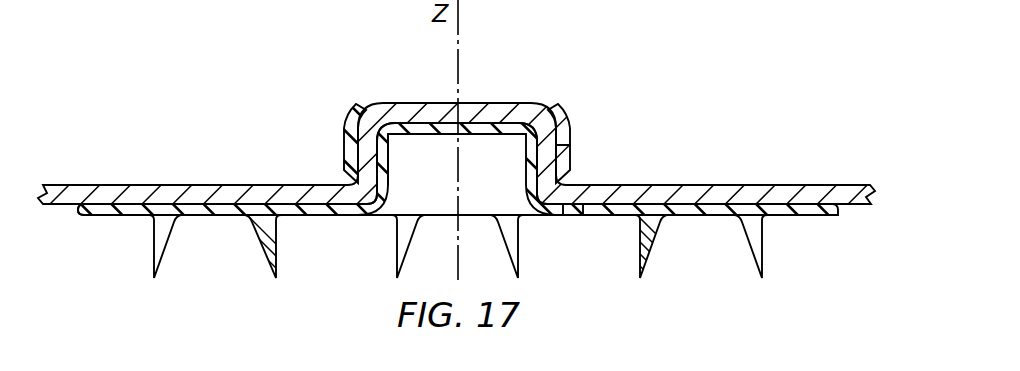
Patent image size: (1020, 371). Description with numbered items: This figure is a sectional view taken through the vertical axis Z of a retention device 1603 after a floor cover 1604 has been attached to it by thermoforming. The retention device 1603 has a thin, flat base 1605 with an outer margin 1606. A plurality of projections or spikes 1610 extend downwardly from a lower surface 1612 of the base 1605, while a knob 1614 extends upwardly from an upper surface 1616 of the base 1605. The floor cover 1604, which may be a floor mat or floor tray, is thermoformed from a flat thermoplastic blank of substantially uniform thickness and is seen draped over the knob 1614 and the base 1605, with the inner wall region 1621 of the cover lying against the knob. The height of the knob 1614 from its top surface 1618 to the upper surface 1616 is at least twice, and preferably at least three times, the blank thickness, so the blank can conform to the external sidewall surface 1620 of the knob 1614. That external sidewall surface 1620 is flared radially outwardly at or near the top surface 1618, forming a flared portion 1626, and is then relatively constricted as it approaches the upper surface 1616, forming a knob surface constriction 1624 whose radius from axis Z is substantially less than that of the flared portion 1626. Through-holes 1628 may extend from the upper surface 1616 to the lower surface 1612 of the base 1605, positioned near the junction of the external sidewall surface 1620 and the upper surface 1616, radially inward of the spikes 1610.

The retention device 1603 is at (798, 216).
The floor cover 1604 is at (825, 183).
The base 1605 is at (107, 210).
The outer margin 1606 is at (77, 208).
The projections or spikes 1610 is at (268, 255).
The lower surface 1612 is at (300, 217).
The knob 1614 is at (502, 105).
The upper surface 1616 is at (185, 200).
The top surface 1618 is at (423, 105).
The external sidewall surface 1620 is at (344, 132).
The cavity wall 1621 is at (386, 157).
The knob surface constriction 1624 is at (564, 174).
The flared portion 1626 is at (572, 124).
The through-holes 1628 is at (572, 208).